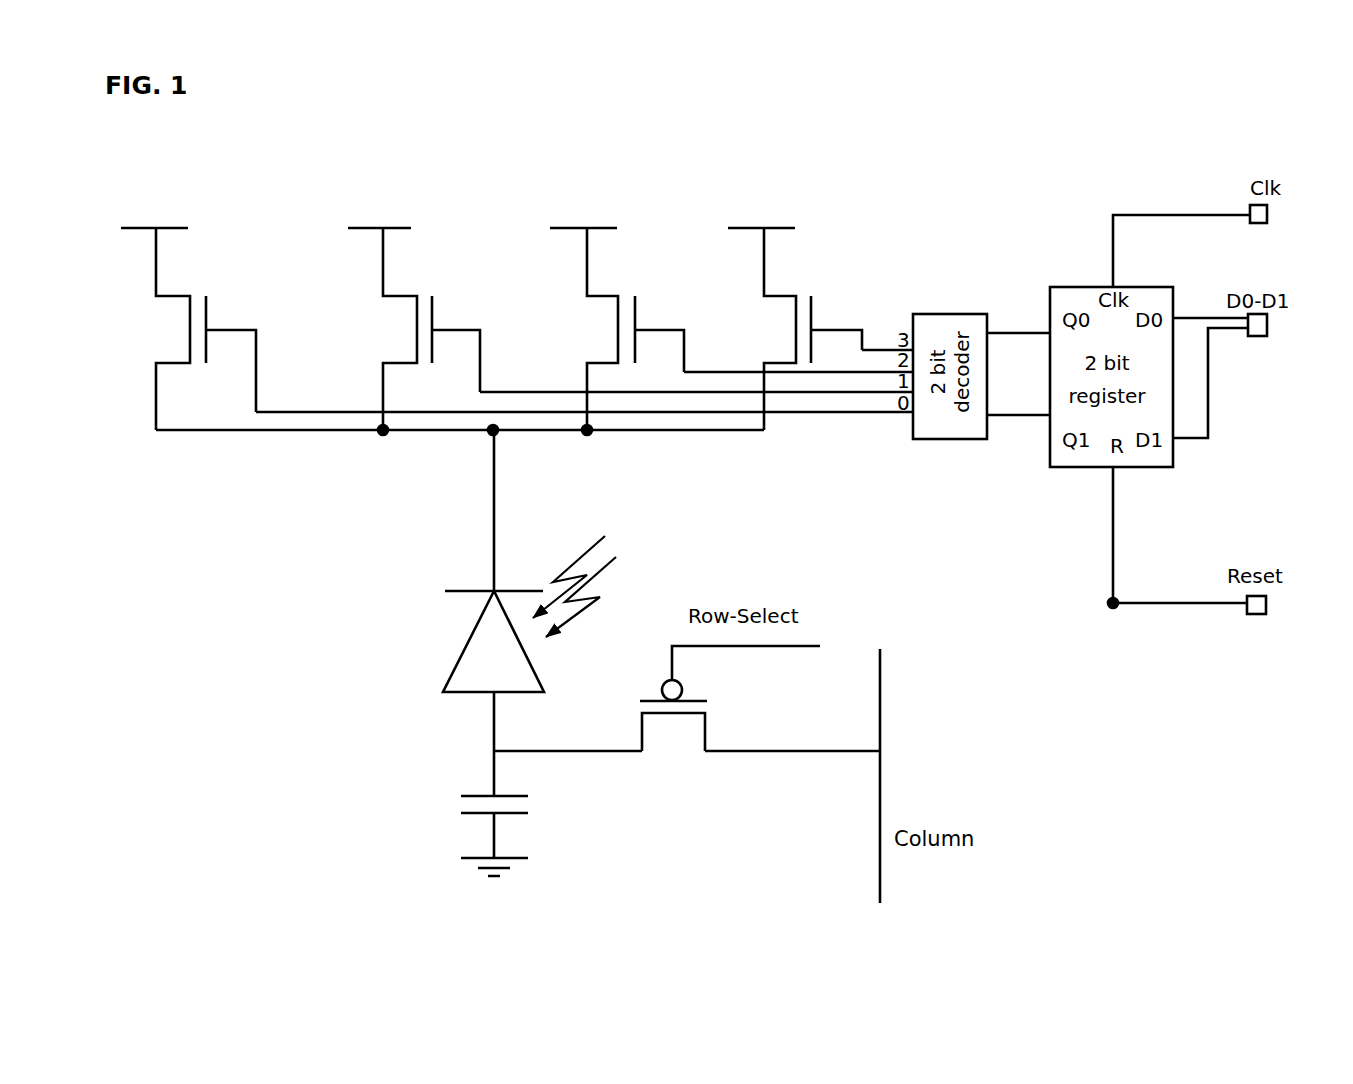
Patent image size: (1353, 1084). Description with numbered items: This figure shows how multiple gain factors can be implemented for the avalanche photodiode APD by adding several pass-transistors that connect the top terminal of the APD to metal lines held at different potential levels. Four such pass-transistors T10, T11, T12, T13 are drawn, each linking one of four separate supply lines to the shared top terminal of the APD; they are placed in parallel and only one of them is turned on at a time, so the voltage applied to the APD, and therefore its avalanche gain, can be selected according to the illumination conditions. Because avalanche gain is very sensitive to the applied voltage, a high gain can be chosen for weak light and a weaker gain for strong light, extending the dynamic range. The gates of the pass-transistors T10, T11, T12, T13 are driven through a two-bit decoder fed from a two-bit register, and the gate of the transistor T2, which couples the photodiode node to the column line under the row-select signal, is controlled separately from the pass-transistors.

The first supply-select transistor (VDD0) T10 is at (188, 313).
The second supply-select transistor (VDD1) T11 is at (414, 313).
The third supply-select transistor (VDD2) T12 is at (617, 313).
The fourth supply-select transistor (VDD3) T13 is at (795, 313).
The transistor T2 is at (730, 699).
The avalanche photodiode APD is at (529, 561).